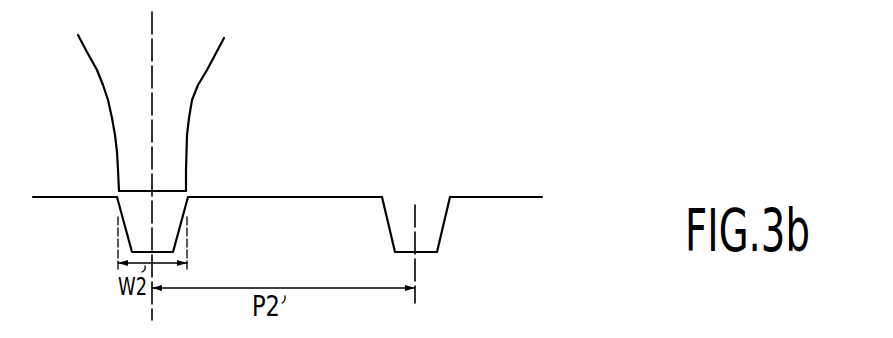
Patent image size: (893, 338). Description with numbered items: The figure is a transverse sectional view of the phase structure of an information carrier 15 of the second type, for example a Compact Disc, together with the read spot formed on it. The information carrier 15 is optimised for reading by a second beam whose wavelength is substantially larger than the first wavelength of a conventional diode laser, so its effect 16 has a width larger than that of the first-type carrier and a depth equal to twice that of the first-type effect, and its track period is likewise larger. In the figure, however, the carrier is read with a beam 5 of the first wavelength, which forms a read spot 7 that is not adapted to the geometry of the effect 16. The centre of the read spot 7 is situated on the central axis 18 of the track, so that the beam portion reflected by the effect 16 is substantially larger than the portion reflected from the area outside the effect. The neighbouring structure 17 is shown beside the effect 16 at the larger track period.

The beam 5 is at (207, 72).
The read spot 7 is at (175, 191).
The information carrier 15 is at (588, 233).
The effect 16 is at (124, 228).
The second groove 17 is at (468, 197).
The central axis 18 is at (152, 25).